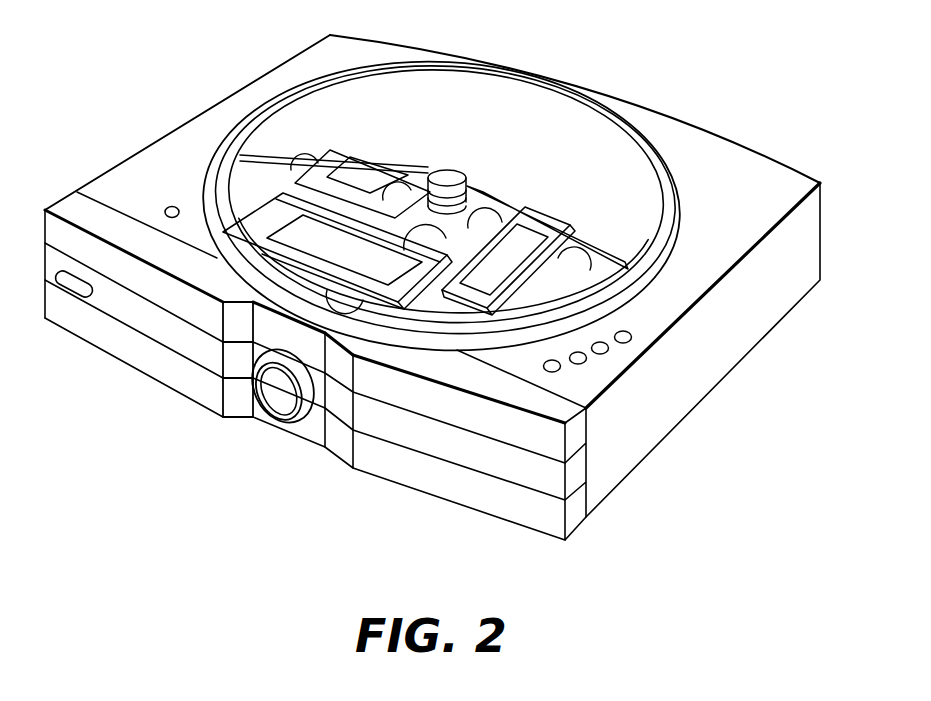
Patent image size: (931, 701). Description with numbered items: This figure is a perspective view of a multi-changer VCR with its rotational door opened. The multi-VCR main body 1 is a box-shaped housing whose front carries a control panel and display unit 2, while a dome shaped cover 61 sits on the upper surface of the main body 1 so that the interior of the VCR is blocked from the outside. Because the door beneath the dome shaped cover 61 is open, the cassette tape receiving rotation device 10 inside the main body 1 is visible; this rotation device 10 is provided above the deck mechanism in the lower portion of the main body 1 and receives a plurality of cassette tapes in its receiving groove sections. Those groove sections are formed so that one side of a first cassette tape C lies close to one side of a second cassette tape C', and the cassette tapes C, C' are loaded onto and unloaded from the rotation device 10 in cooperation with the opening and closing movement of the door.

The multi-VCR main body 1 is at (765, 152).
The control panel and display unit 2 is at (473, 490).
The cassette tape receiving rotation device 10 is at (593, 277).
The dome shaped cover 61 is at (503, 98).
The first cassette tape C is at (301, 203).
The second cassette tape C' is at (534, 250).